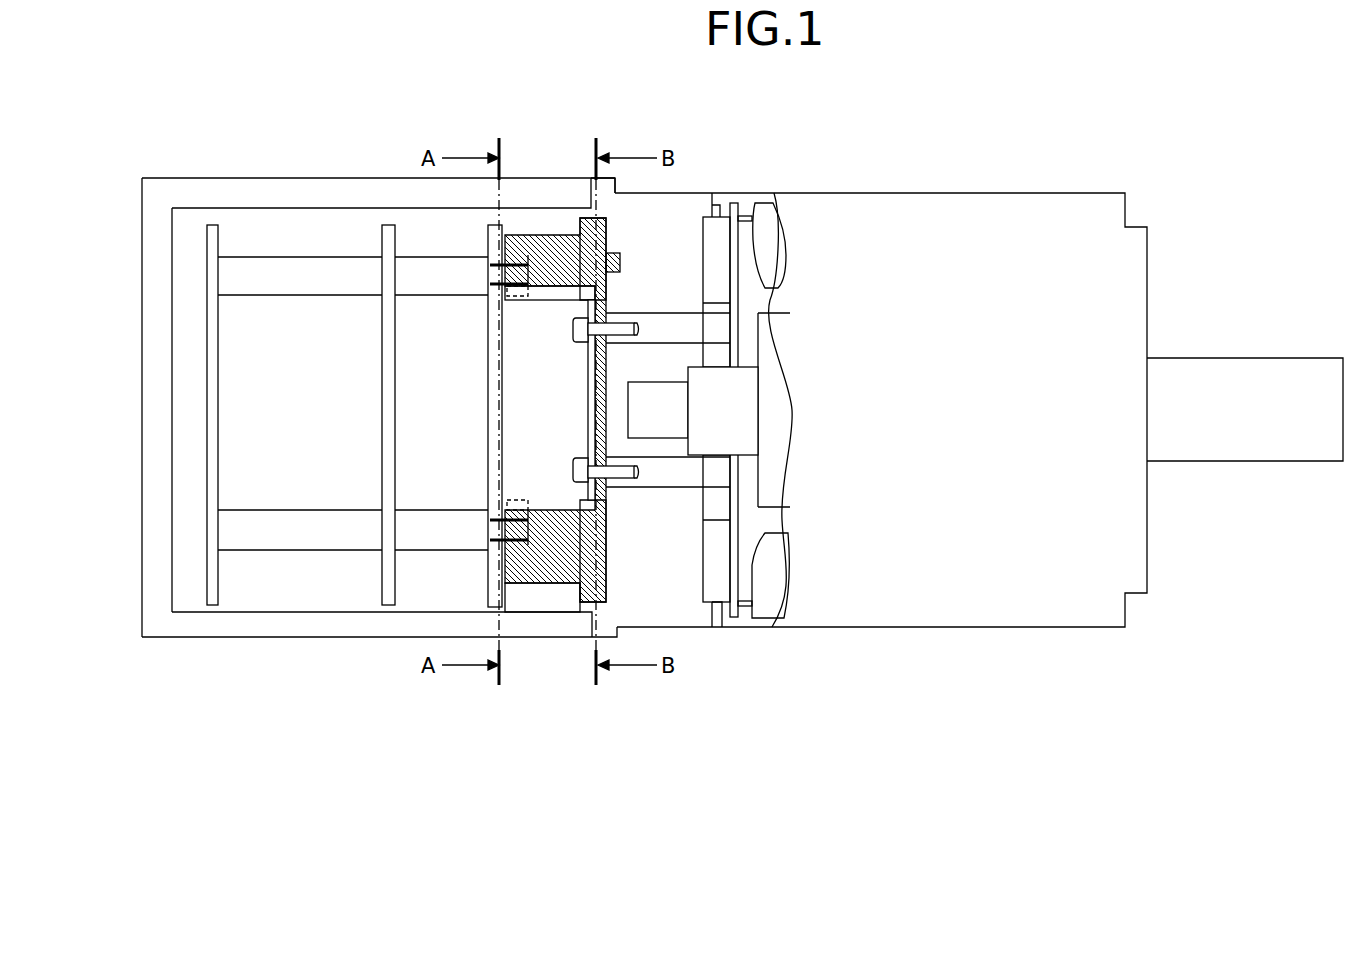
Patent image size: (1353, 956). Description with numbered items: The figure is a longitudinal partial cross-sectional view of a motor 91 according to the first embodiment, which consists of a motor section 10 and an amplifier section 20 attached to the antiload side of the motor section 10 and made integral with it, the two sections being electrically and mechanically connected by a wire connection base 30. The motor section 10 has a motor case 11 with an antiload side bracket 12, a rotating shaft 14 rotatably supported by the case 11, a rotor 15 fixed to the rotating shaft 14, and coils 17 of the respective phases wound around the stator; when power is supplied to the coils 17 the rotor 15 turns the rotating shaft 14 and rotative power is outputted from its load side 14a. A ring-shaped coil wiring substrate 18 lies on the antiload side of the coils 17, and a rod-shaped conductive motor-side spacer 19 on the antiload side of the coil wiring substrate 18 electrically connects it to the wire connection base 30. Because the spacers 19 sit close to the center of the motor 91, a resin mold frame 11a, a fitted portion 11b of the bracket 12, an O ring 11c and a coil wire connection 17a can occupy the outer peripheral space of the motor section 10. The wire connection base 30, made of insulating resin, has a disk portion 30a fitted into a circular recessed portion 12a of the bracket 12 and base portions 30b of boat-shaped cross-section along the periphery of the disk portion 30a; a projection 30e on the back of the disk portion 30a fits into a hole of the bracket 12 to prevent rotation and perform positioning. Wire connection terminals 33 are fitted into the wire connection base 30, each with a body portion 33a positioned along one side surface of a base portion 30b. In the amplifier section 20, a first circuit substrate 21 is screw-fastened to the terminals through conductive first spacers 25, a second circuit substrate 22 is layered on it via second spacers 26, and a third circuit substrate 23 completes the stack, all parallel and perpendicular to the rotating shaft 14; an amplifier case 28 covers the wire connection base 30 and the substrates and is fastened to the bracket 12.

The motor section 10 is at (979, 364).
The motor case 11 is at (860, 193).
The resin mold frame 11a is at (715, 233).
The fitted portion 11b is at (706, 175).
The O ring 11c is at (718, 205).
The antiload side bracket 12 is at (757, 388).
The recessed portion 12a is at (600, 567).
The rotating shaft 14 is at (728, 444).
The load side 14a is at (1228, 358).
The rotor 15 is at (678, 397).
The coils 17 is at (768, 580).
The coil wire connection 17a is at (748, 607).
The coil wiring substrate 18 is at (737, 530).
The motor-side spacer 19 is at (710, 327).
The amplifier section 20 is at (338, 407).
The first circuit substrate 21 is at (482, 240).
The second circuit substrate 22 is at (388, 572).
The third circuit substrate 23 is at (213, 434).
The first spacers 25 is at (438, 272).
The second spacers 26 is at (287, 275).
The amplifier case 28 is at (152, 316).
The wire connection base 30 is at (621, 390).
The disk portion 30a is at (587, 543).
The base portion 30b is at (553, 236).
The projection 30e is at (614, 255).
The wire connection terminal 33 is at (514, 300).
The body portion 33a is at (537, 299).
The motor 91 is at (958, 373).